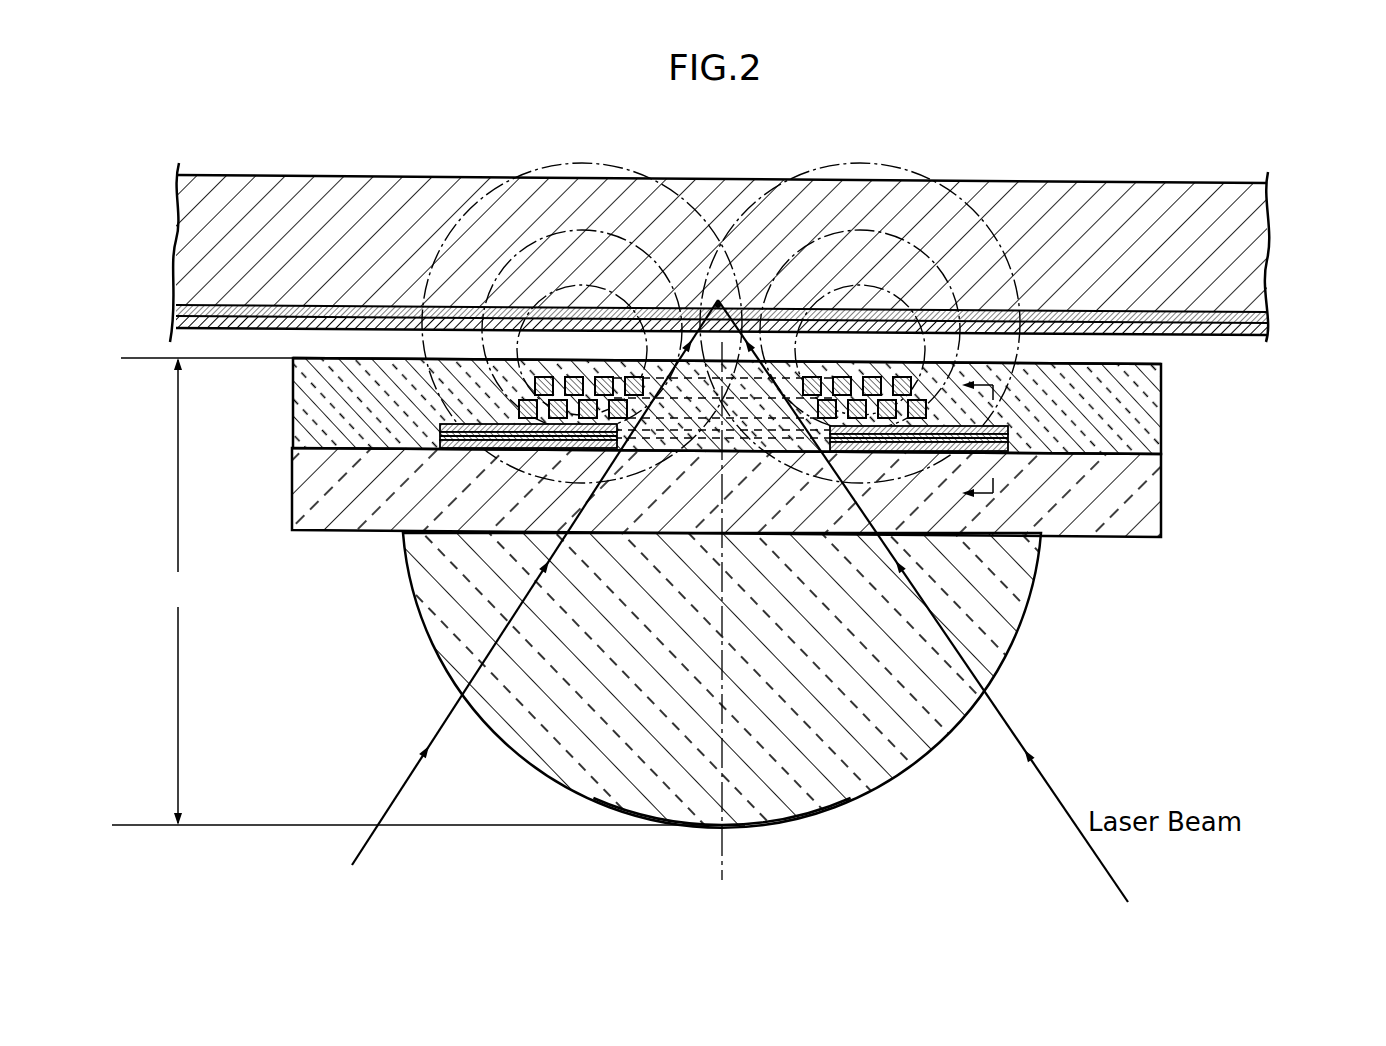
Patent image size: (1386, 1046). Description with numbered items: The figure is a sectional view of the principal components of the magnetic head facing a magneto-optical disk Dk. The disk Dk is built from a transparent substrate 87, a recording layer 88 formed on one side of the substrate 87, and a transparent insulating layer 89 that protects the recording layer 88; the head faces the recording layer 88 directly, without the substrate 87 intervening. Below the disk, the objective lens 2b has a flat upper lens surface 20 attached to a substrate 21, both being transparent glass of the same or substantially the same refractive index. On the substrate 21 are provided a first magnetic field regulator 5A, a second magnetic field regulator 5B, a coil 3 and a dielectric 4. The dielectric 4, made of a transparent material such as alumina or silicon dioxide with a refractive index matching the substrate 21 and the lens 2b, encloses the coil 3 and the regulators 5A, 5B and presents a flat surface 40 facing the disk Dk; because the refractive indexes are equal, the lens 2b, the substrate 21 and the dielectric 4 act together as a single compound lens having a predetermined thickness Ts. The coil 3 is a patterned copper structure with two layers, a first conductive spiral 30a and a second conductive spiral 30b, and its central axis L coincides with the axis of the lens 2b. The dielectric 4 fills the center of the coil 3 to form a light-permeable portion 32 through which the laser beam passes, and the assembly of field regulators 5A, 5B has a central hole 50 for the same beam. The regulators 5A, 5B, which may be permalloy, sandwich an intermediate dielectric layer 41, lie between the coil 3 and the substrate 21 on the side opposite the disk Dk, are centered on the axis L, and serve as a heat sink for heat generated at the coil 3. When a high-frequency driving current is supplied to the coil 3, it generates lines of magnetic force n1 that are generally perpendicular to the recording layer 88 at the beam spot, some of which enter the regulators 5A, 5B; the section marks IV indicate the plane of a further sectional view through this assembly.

The disk Dk is at (767, 225).
The transparent substrate 87 is at (1252, 250).
The recording layer 88 is at (1270, 313).
The transparent insulating layer 89 is at (1272, 328).
The lines of magnetic force n1 is at (657, 178).
The light-permeable portion 32 is at (807, 308).
The coil 3 is at (873, 368).
The dielectric 4 is at (1150, 407).
The slider surface 40 is at (1060, 366).
The central hole 50 is at (661, 452).
The second conductive spiral 30b is at (527, 383).
The first conductive spiral 30a is at (512, 404).
The second magnetic field regulator 5B is at (1010, 429).
The intermediate layer 41 is at (1012, 438).
The first magnetic field regulator 5A is at (1012, 451).
The section line IV- IV is at (976, 441).
The substrate 21 is at (1150, 513).
The upper lens surface 20 is at (791, 531).
The objective lens 2b is at (874, 779).
The central axis L is at (727, 463).
The thickness Ts is at (428, 591).